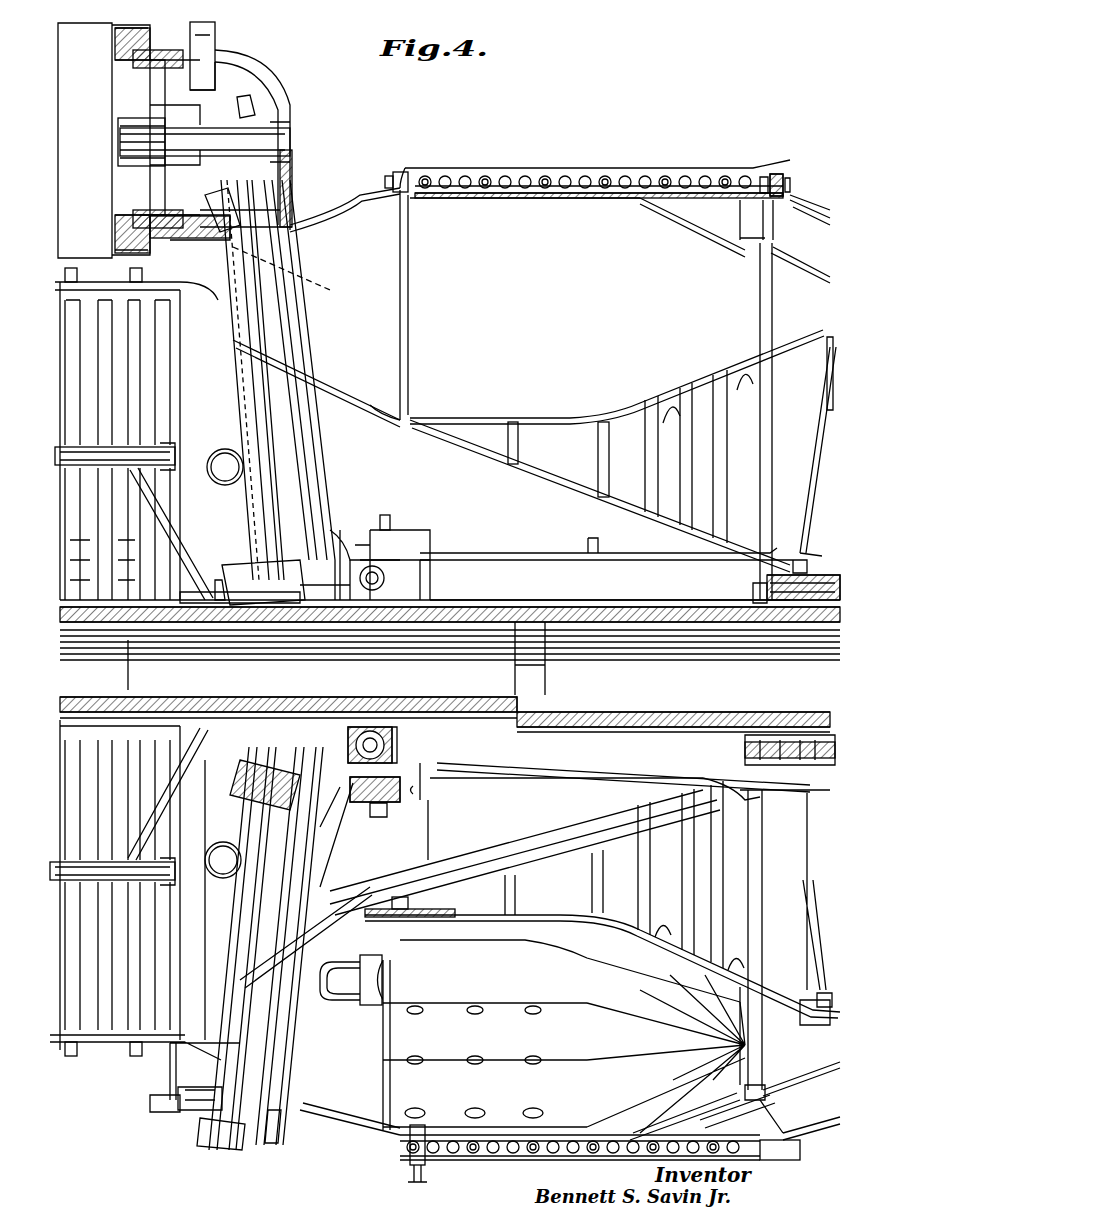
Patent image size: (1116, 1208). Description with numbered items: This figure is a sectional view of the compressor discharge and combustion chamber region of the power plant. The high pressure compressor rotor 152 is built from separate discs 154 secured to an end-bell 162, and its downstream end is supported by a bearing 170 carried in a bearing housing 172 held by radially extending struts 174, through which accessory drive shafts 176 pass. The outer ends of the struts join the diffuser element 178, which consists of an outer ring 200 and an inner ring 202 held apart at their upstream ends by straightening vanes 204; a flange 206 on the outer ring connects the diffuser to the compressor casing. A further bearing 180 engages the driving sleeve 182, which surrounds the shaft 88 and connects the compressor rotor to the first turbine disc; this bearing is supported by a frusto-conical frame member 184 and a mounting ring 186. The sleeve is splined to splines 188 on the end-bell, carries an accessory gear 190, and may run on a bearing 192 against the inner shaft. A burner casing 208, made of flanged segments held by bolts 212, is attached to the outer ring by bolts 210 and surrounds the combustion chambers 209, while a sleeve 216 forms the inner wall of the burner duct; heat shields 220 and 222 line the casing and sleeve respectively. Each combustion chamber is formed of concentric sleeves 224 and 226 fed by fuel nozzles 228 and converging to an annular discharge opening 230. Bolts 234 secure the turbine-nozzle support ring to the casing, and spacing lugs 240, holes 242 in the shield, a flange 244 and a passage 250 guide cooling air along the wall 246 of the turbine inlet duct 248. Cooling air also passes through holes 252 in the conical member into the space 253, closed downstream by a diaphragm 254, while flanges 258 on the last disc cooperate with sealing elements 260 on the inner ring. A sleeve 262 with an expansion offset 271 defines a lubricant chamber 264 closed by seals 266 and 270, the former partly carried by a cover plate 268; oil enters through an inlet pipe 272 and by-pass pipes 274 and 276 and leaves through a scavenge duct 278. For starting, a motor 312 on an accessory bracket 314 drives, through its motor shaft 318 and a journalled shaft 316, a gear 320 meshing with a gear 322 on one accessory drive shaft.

The shaft 88 is at (597, 620).
The rotor 152 is at (135, 386).
The discs 154 is at (125, 955).
The end-bell 162 is at (165, 535).
The bearing 170 is at (382, 545).
The bearing housing 172 is at (334, 522).
The struts 174 is at (306, 334).
The accessory drive shafts 176 is at (285, 262).
The diffuser element 178 is at (308, 202).
The bearing 180 is at (750, 596).
The driving sleeve 182 is at (580, 612).
The frusto-conical frame member 184 is at (567, 485).
The mounting ring 186 is at (800, 562).
The splines 188 is at (192, 603).
The gear 190 is at (348, 596).
The bearing 192 is at (418, 716).
The outer ring 200 is at (362, 185).
The inner ring 202 is at (340, 392).
The straightening vanes 204 is at (200, 330).
The flange 206 is at (146, 281).
The burner casing 208 is at (683, 197).
The combustion chambers 209 is at (443, 967).
The bolts 210 is at (408, 172).
The bolts 212 is at (540, 176).
The sleeve 216 is at (444, 418).
The heat shield 220 is at (575, 200).
The heat shield 222 is at (520, 415).
The sleeve 224 is at (507, 943).
The sleeve 226 is at (477, 1008).
The nozzles 228 is at (322, 982).
The annular discharge opening 230 is at (690, 1008).
The bolts 234 is at (790, 180).
The spacing lugs 240 is at (785, 1130).
The holes 242 is at (652, 1150).
The flange 244 is at (740, 1125).
The wall 246 is at (806, 272).
The turbine inlet duct 248 is at (818, 1041).
The passage 250 is at (765, 1097).
The holes 252 is at (545, 478).
The space 253 is at (648, 466).
The diaphragm 254 is at (812, 455).
The flanges 258 is at (115, 1050).
The sealing elements 260 is at (157, 1045).
The sleeve 262 is at (485, 556).
The chamber 264 is at (533, 589).
The seal 266 is at (232, 608).
The cover plate 268 is at (225, 450).
The seal 270 is at (800, 735).
The offset 271 is at (435, 793).
The lubricant inlet pipe 272 is at (322, 835).
The by-pass pipe 274 is at (362, 818).
The by-pass pipe 276 is at (690, 753).
The duct 278 is at (503, 845).
The motor 312 is at (78, 45).
The accessory bracket 314 is at (240, 87).
The shaft 316 is at (262, 137).
The motor shaft 318 is at (118, 143).
The gear 320 is at (237, 97).
The gear 322 is at (210, 197).